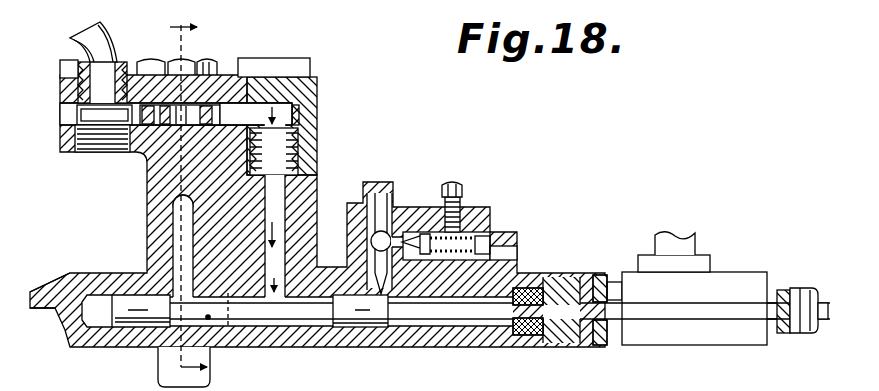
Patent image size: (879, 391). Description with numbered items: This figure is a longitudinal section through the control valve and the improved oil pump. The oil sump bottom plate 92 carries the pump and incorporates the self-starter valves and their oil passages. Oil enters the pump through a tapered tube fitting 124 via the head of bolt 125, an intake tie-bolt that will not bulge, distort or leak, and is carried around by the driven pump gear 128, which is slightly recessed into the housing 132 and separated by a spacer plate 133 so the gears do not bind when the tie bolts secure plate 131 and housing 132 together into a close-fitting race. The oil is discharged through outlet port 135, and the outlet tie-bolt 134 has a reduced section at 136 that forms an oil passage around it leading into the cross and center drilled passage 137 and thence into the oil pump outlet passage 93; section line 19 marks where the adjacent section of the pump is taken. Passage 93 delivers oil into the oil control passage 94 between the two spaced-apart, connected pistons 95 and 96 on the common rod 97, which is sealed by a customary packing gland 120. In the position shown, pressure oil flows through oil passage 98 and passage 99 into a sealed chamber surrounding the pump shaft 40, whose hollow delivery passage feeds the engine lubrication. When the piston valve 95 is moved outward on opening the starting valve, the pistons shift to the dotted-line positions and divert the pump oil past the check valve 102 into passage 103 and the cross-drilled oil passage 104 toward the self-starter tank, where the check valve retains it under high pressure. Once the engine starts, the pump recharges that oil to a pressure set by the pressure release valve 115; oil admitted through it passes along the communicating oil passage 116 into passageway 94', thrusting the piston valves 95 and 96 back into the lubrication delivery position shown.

The section line 19— 19 is at (205, 201).
The pump shaft 40 is at (157, 363).
The oil sump bottom plate 92 is at (43, 310).
The oil pump outlet passage 93 is at (273, 192).
The oil control passage 94 is at (458, 342).
The passageway 94' is at (540, 331).
The piston valve 95 is at (123, 303).
The piston 96 is at (358, 323).
The common rod 97 is at (826, 300).
The oil passage 98 is at (173, 245).
The passage 99 is at (173, 203).
The check valve 102 is at (378, 262).
The passage 103 is at (363, 214).
The cross-drilled oil passage 104 is at (370, 242).
The pressure release valve 115 is at (462, 193).
The communicating oil passage 116 is at (450, 277).
The packing gland 120 is at (603, 273).
The tapered tube fitting 124 is at (76, 38).
The bolt 125 is at (83, 60).
The pump gear 128 is at (170, 100).
The plate 131 is at (317, 90).
The housing 132 is at (55, 152).
The spacer plate 133 is at (62, 112).
The tie-bolt 134 is at (307, 62).
The outlet port 135 is at (233, 113).
The reduced section 136 is at (300, 115).
The cross and center drilled passage 137 is at (280, 138).